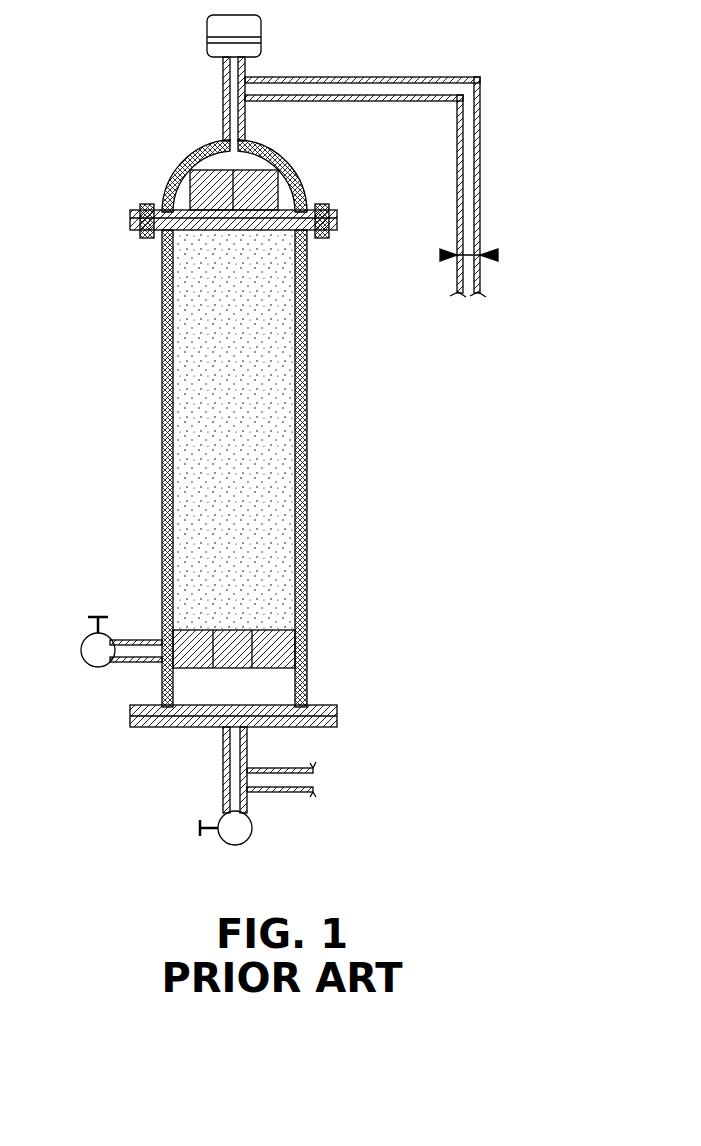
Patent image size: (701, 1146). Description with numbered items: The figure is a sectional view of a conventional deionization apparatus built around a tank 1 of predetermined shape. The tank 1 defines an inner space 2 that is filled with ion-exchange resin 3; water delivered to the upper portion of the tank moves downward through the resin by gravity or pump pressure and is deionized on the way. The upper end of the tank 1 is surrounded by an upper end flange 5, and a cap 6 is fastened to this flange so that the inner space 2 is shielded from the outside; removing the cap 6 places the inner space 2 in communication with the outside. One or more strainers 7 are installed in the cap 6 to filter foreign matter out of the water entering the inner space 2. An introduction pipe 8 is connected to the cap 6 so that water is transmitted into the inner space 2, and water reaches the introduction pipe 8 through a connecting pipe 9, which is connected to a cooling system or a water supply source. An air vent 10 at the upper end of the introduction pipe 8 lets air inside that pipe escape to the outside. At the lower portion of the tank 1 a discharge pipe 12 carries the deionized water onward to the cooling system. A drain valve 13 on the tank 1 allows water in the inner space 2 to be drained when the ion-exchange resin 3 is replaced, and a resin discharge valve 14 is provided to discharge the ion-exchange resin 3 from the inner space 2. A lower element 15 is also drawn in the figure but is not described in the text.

The tank 1 is at (162, 362).
The inner space 2 is at (285, 386).
The ion-exchange resin 3 is at (205, 402).
The upper end flange 5 is at (138, 222).
The cap 6 is at (290, 162).
The strainer 7 is at (176, 160).
The introduction pipe 8 is at (222, 103).
The connecting pipe 9 is at (490, 268).
The air vent 10 is at (262, 19).
The discharge pipe 12 is at (277, 796).
The drain valve 13 is at (245, 838).
The resin discharge valve 14 is at (84, 662).
The lower filter block 15 is at (307, 648).